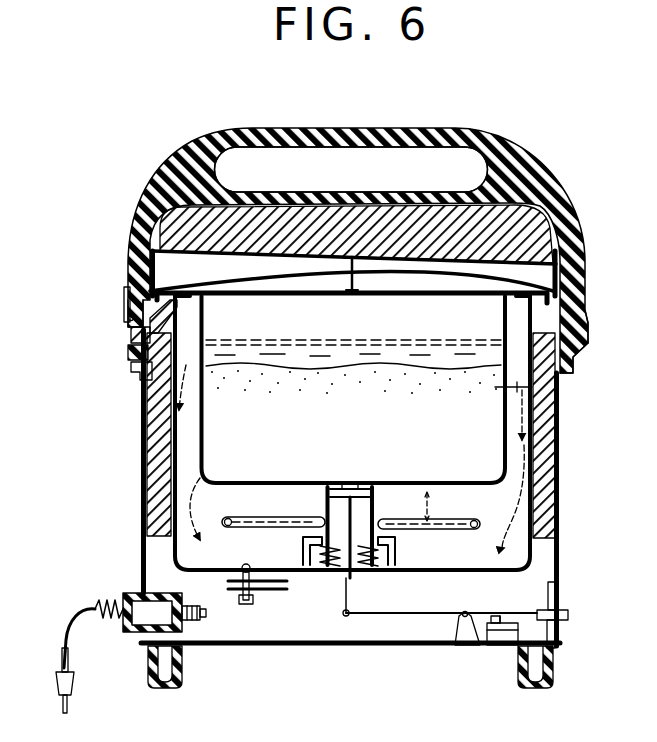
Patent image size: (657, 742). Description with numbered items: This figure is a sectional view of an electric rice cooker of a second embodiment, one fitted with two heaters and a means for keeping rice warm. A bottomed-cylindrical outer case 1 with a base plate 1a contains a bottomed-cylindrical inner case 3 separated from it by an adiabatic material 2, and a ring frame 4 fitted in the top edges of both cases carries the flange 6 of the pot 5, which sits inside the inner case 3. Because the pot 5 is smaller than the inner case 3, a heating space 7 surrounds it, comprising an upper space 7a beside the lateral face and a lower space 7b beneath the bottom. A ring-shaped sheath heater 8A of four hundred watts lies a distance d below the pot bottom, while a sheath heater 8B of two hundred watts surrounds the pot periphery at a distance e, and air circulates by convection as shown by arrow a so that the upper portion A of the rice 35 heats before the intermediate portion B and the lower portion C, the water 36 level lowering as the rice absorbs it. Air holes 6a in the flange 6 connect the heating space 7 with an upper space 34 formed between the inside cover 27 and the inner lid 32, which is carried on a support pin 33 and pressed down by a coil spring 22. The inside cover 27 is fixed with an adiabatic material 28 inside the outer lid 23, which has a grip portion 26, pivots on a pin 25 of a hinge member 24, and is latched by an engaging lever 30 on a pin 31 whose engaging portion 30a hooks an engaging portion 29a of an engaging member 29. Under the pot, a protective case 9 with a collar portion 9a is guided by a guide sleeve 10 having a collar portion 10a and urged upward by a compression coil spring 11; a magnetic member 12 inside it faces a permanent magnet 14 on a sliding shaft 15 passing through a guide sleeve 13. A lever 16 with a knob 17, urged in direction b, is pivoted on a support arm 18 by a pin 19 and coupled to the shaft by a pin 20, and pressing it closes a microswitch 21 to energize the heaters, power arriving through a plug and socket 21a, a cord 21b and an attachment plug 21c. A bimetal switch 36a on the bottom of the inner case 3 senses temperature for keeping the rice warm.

The outer case 1 is at (560, 548).
The base plate 1a is at (270, 641).
The adiabatic material 2 is at (548, 460).
The inner case 3 is at (470, 568).
The ring frame 4 is at (134, 272).
The pot 5 is at (507, 326).
The flange 6 is at (167, 294).
The air holes 6a is at (187, 304).
The heating space 7 is at (250, 500).
The upper space 7a is at (510, 398).
The lower space 7b is at (462, 483).
The sheath heater 8A is at (283, 520).
The sheath heater 8B is at (150, 388).
The protective case 9 is at (374, 513).
The collar portion 9a is at (397, 541).
The guide sleeve 10 is at (400, 560).
The collar portion 10a is at (307, 532).
The compression coil spring 11 is at (370, 574).
The magnetic member 12 is at (368, 485).
The guide sleeve 13 is at (351, 526).
The permanent magnet 14 is at (340, 485).
The sliding shaft 15 is at (344, 598).
The lever 16 is at (451, 611).
The knob 17 is at (560, 612).
The support arm 18 is at (456, 636).
The pin 19 is at (478, 613).
The pin 20 is at (344, 616).
The microswitch 21 is at (510, 630).
The plug and socket 21a is at (133, 612).
The cord 21b is at (71, 612).
The attachment plug 21c is at (70, 705).
The coil spring 22 is at (343, 270).
The outer lid 23 is at (580, 217).
The hinge member 24 is at (581, 341).
The pin 25 is at (576, 314).
The grip portion 26 is at (455, 128).
The inside cover 27 is at (484, 262).
The adiabatic material 28 is at (443, 216).
The engaging member 29 is at (132, 372).
The engaging portion 29a is at (131, 334).
The engaging lever 30 is at (124, 290).
The engaging portion 30a is at (130, 351).
The pin 31 is at (128, 318).
The inner lid 32 is at (272, 262).
The support pin 33 is at (355, 295).
The upper space 34 is at (433, 270).
The rice 35 is at (255, 380).
The water 36 is at (279, 338).
The bimetal switch 36a is at (242, 599).
The upper portion A is at (349, 387).
The intermediate portion B is at (349, 428).
The lower portion C is at (350, 467).
The arrow a is at (351, 456).
The arrow b is at (464, 606).
The distance d is at (434, 504).
The distance e is at (506, 388).